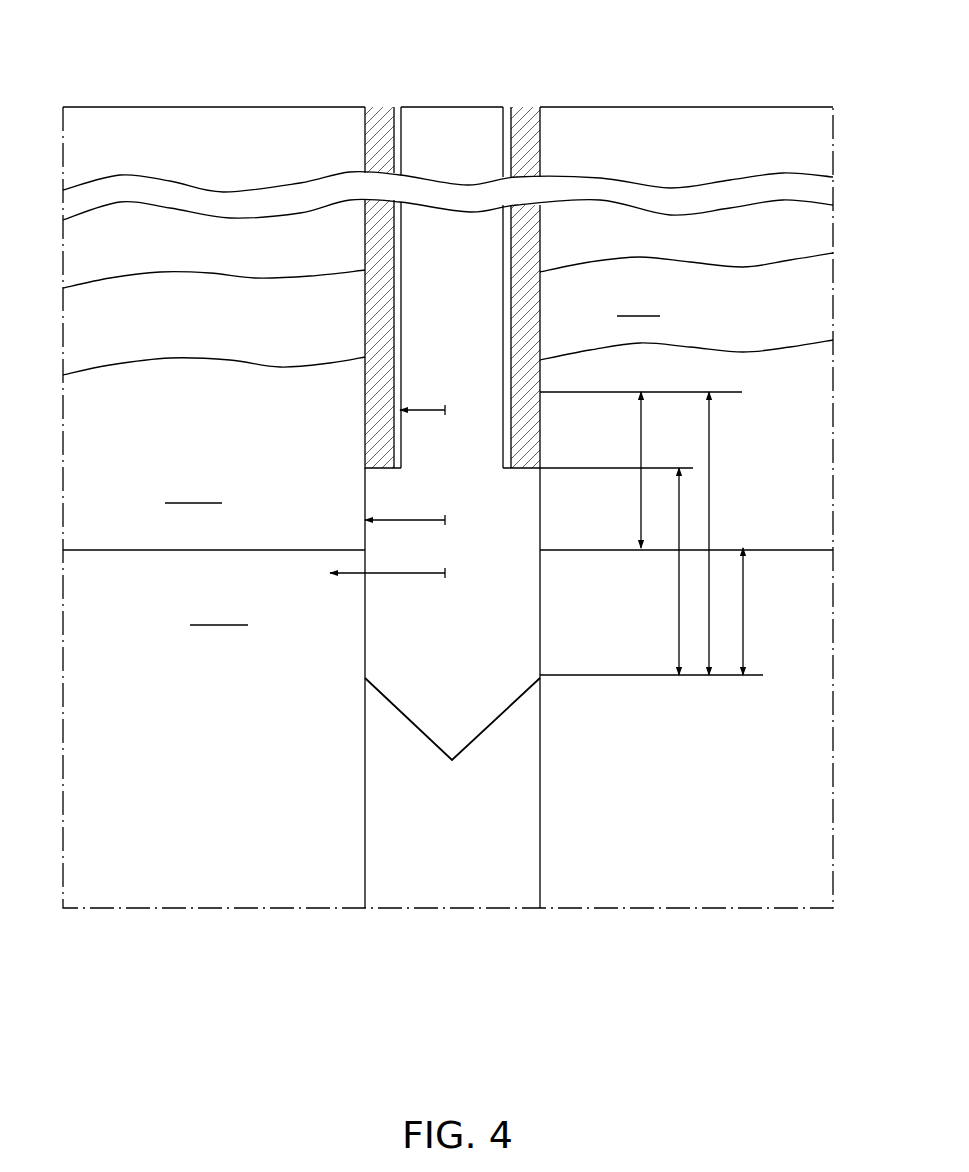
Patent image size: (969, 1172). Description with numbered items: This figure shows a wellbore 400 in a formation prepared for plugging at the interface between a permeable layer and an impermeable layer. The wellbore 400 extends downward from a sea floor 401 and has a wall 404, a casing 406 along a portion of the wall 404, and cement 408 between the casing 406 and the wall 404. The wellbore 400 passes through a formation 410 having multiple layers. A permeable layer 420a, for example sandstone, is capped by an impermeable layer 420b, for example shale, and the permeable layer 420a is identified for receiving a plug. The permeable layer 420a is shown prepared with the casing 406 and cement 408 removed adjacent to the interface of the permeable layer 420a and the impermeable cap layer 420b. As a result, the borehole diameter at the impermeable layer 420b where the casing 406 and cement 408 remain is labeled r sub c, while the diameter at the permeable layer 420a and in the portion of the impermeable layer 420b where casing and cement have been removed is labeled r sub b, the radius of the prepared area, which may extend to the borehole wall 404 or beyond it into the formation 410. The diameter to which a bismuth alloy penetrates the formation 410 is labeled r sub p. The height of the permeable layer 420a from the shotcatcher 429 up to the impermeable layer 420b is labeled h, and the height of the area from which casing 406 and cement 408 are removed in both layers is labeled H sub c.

The wellbore 400 is at (402, 86).
The sea floor 401 is at (744, 107).
The wall 404 is at (540, 228).
The casing 406 is at (517, 107).
The cement 408 is at (523, 135).
The formation 410 is at (448, 314).
The permeable layer 420a is at (448, 588).
The impermeable layer 420b is at (193, 493).
The shotcatcher 429 is at (510, 707).